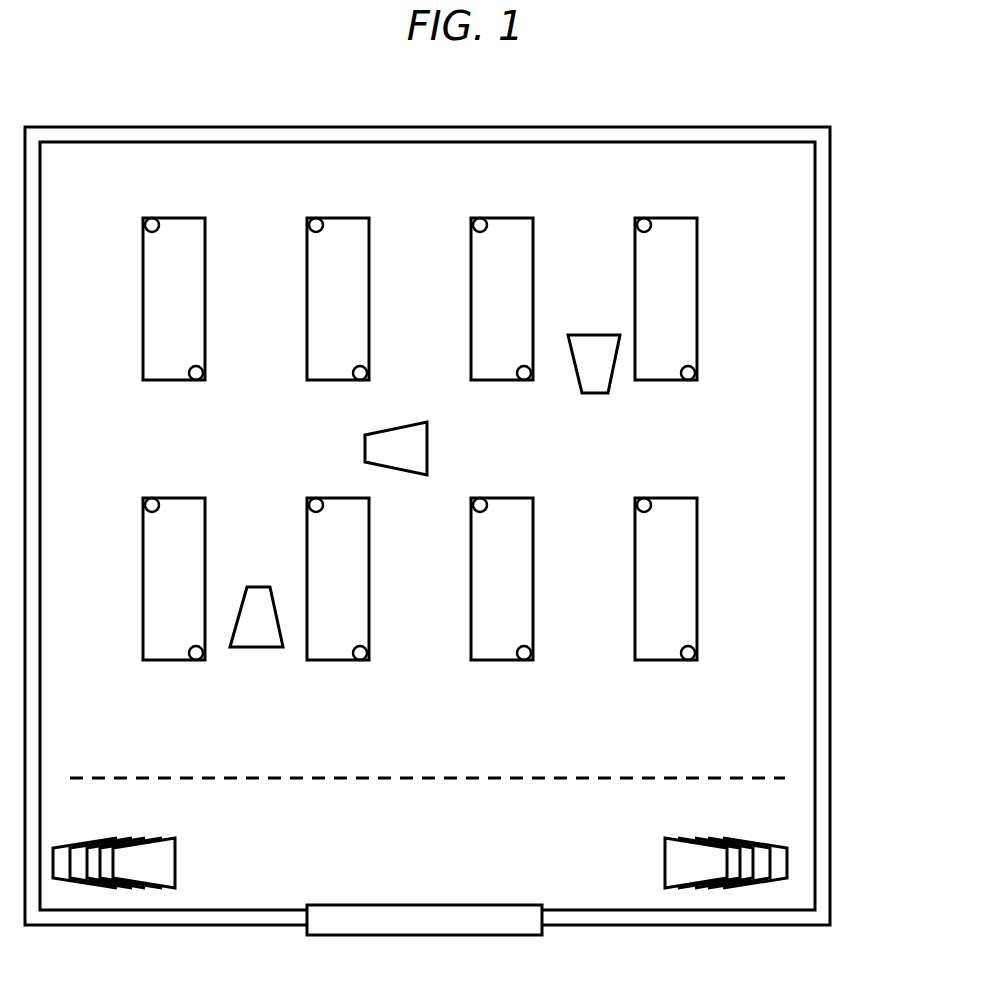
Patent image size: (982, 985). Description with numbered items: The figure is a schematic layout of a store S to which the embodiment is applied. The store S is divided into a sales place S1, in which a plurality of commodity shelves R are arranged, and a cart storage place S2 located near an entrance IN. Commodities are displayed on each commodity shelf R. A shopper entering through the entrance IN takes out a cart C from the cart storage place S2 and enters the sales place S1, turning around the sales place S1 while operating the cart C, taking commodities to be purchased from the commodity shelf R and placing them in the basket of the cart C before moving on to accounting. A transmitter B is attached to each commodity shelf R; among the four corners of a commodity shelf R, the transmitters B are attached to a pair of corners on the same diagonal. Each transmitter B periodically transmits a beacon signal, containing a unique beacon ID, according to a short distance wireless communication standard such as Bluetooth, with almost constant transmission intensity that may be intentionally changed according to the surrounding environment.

The store S is at (785, 124).
The sales place S1 is at (800, 438).
The cart storage place S2 is at (800, 823).
The entrance IN is at (413, 935).
The commodity shelf R is at (204, 305).
The transmitter B is at (148, 219).
The cart C is at (594, 335).